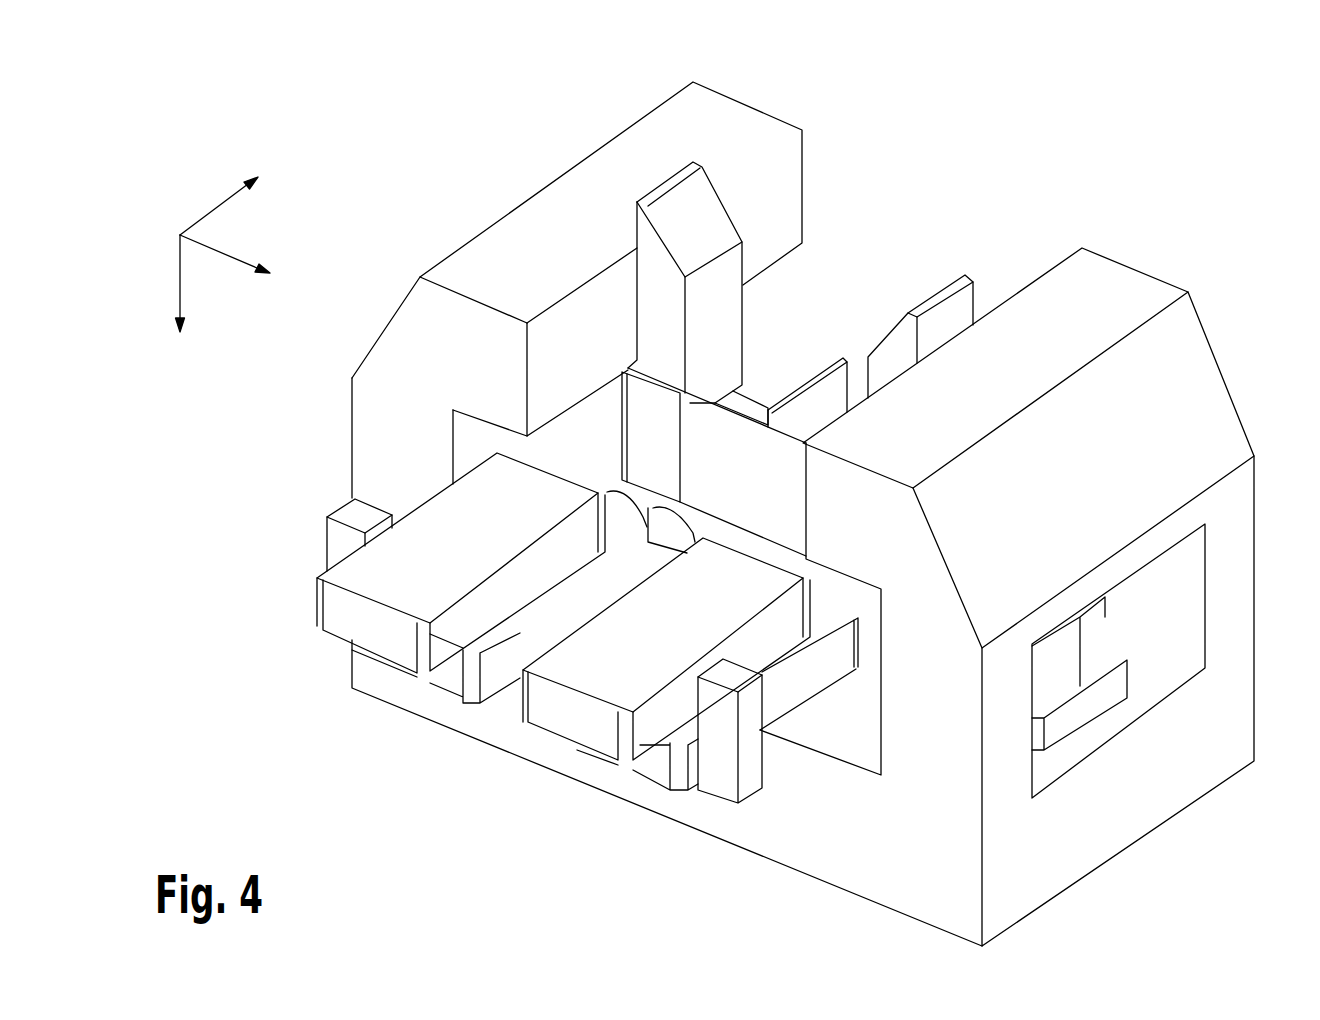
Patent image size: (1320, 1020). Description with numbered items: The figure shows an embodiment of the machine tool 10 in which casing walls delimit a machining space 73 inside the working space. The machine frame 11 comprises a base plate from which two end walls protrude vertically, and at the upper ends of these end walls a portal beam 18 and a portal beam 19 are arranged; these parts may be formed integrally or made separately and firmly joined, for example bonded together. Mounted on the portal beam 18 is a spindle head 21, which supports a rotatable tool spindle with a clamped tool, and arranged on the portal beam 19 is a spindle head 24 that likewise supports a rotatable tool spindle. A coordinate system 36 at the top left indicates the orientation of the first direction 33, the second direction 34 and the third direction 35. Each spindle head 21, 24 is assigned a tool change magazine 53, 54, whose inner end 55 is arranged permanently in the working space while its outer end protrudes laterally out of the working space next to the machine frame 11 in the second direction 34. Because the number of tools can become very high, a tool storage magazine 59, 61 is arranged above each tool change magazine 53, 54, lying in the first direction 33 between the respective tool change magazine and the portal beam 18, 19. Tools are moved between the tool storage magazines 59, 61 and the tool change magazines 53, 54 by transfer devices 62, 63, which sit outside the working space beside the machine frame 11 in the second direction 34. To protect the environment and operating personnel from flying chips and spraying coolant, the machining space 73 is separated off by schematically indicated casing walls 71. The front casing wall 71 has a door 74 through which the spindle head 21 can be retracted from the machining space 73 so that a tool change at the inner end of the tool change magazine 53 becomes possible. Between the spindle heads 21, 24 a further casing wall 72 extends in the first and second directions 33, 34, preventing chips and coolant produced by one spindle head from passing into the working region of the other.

The machine tool 10 is at (1247, 304).
The machine frame 11 is at (917, 726).
The portal beam 18 is at (735, 123).
The portal beam 19 is at (1113, 283).
The spindle head 21 is at (713, 275).
The spindle head 24 is at (957, 305).
The first direction 33 is at (180, 270).
The second direction 34 is at (210, 213).
The third direction 35 is at (223, 257).
The coordinate system 36 is at (193, 208).
The tool change magazine 53 is at (448, 677).
The tool change magazine 54 is at (653, 760).
The inner end 55 is at (627, 533).
The tool storage magazine 59 is at (347, 627).
The tool storage magazine 61 is at (560, 712).
The transfer device 62 is at (350, 513).
The transfer device 63 is at (748, 770).
The casing wall 71 is at (747, 407).
The further casing wall 72 is at (825, 397).
The machining space 73 is at (779, 318).
The door 74 is at (650, 415).